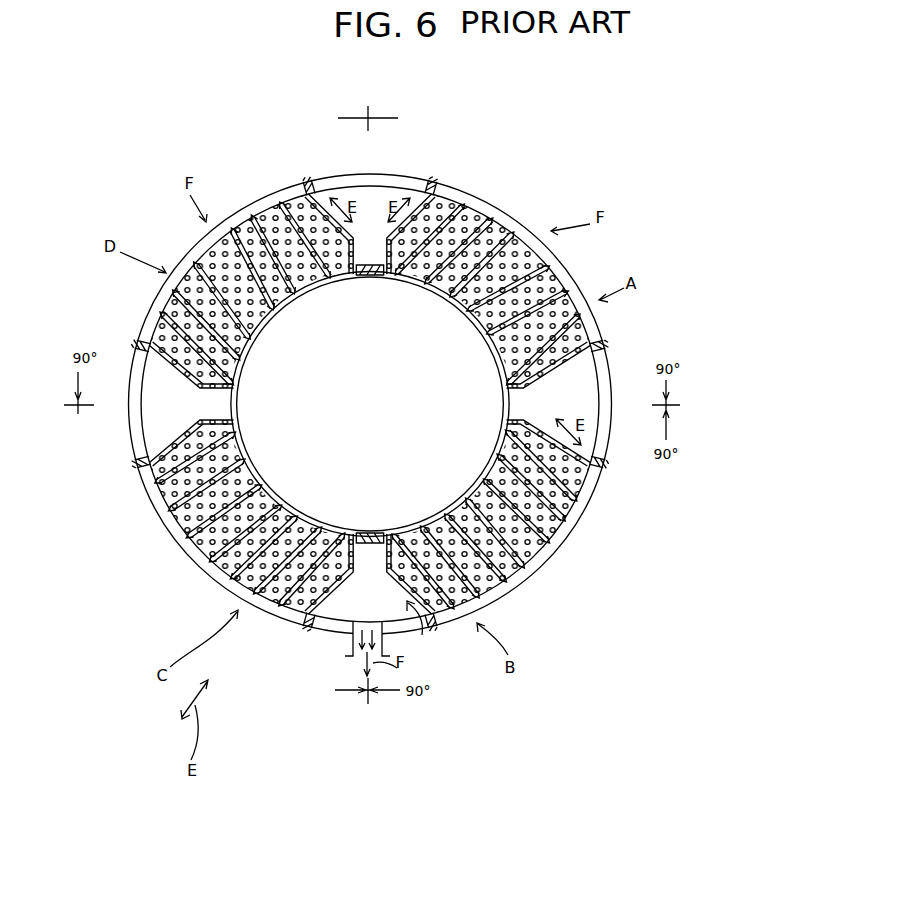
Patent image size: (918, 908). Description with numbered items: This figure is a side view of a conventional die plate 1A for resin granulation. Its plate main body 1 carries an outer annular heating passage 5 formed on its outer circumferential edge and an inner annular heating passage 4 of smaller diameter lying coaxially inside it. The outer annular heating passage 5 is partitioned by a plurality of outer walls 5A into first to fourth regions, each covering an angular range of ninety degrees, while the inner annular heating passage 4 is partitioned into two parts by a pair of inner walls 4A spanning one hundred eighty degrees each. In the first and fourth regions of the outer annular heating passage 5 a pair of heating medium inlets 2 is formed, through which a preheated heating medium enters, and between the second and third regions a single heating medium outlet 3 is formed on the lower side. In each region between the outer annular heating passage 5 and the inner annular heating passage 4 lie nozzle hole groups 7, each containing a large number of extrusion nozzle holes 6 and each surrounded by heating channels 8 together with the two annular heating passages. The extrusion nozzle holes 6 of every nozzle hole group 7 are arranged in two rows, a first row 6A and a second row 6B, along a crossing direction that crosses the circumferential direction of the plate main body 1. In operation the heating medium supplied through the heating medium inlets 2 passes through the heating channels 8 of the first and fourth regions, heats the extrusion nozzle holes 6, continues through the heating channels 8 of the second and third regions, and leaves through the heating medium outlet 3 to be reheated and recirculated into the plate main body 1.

The plate main body 1 is at (525, 196).
The die plate 1A is at (515, 188).
The heating medium inlet 2 is at (547, 226).
The heating medium outlet 3 is at (352, 660).
The inner annular heating passage 4 is at (325, 526).
The inner wall 4A is at (374, 278).
The outer annular heating passage 5 is at (333, 176).
The outer wall 5A is at (318, 185).
The extrusion nozzle hole 6 is at (590, 285).
The first row 6A is at (292, 620).
The second row 6B is at (278, 594).
The nozzle hole group 7 is at (243, 337).
The heating channel 8 is at (580, 250).